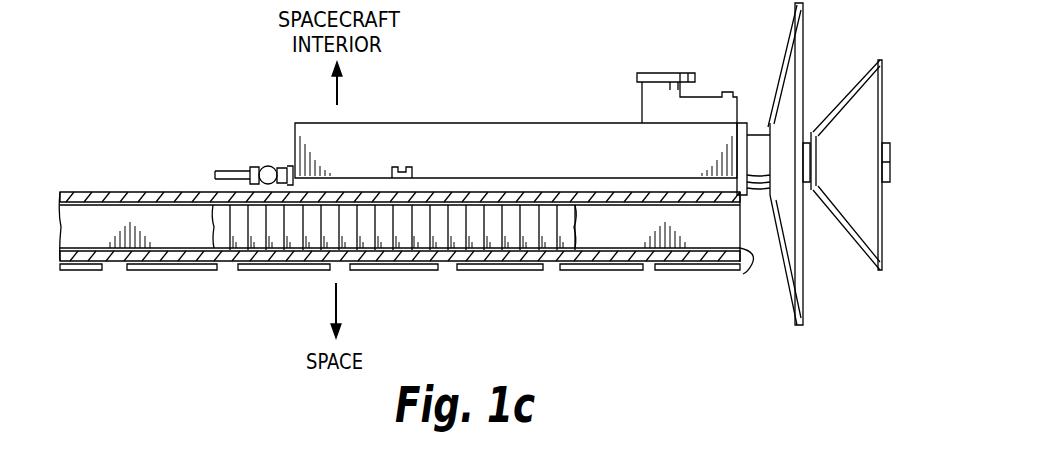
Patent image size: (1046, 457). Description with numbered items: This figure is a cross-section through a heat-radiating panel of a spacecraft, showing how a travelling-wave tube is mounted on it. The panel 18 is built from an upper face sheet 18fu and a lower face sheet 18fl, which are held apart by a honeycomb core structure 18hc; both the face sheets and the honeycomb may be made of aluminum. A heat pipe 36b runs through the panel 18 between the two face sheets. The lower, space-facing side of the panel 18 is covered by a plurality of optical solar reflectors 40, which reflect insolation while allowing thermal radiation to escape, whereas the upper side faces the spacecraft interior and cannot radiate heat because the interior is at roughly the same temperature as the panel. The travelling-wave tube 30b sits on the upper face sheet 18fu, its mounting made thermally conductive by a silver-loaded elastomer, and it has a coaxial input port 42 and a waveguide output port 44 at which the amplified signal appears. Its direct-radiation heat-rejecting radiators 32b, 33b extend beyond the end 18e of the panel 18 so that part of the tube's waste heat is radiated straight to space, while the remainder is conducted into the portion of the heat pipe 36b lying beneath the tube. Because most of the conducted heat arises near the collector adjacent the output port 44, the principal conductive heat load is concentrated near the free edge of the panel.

The panel 18 is at (92, 142).
The upper face sheet 18fu is at (151, 192).
The lower face sheet 18fl is at (114, 264).
The honeycomb core structure 18hc is at (229, 264).
The end of panel 18e is at (745, 275).
The heat pipe 36b is at (59, 244).
The optical solar reflectors 40 is at (508, 272).
The coaxial input port 42 is at (265, 165).
The waveguide output port 44 is at (663, 73).
The travelling-wave tube 30b is at (498, 123).
The direct-radiation heat rejecting radiator 33b is at (798, 329).
The direct-radiation heat rejecting radiator 32b is at (880, 270).